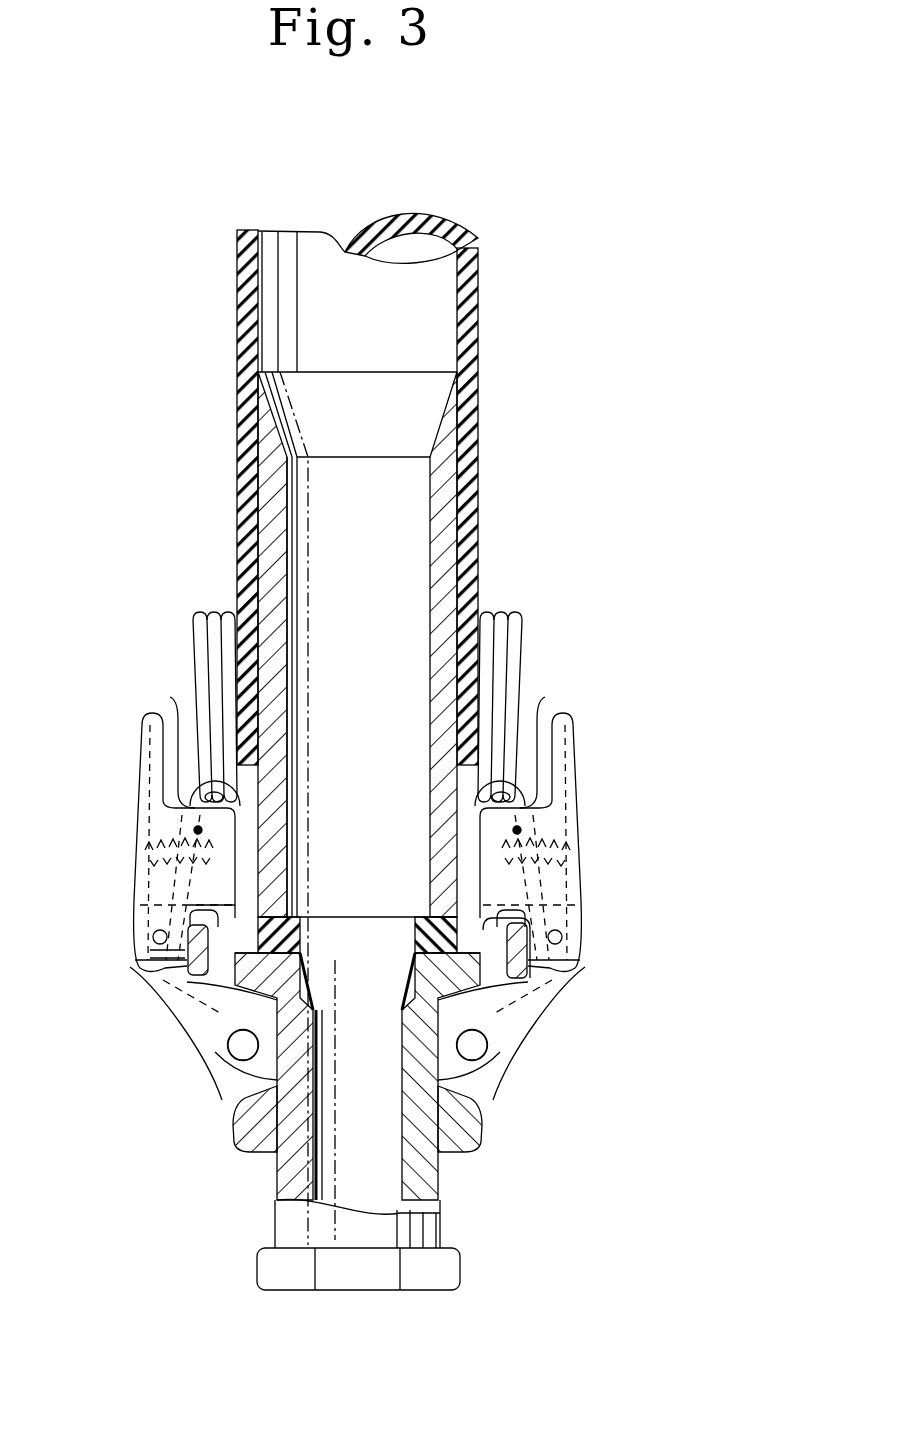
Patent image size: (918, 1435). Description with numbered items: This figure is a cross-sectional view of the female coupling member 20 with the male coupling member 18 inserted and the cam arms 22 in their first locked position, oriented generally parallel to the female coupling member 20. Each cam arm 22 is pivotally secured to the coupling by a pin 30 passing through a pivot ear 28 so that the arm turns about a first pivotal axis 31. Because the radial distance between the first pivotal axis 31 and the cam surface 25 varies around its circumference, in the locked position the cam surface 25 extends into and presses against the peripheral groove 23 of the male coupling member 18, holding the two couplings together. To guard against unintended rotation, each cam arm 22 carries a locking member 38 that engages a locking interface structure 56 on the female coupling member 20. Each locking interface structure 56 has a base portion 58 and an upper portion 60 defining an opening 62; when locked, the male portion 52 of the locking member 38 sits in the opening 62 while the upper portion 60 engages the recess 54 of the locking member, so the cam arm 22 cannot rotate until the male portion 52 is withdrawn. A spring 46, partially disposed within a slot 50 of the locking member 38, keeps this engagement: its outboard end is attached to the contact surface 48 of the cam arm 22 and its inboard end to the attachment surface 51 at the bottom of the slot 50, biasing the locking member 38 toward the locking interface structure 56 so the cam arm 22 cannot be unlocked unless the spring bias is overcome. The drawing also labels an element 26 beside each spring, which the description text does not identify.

The male coupling member 18 is at (445, 1178).
The female coupling member 20 is at (270, 762).
The cam arm 22 is at (135, 830).
The peripheral groove 23 is at (245, 1115).
The cam surface 25 is at (316, 1085).
The coil spring 26 is at (200, 628).
The pivot ear 28 is at (220, 1093).
The pin 30 is at (233, 1035).
The first pivotal axis 31 is at (243, 1045).
The locking member 38 is at (170, 697).
The spring 46 is at (130, 815).
The contact surface 48 is at (143, 755).
The slot 50 is at (232, 800).
The attachment surface 51 is at (200, 832).
The male portion 52 is at (300, 925).
The recess 54 is at (192, 915).
The locking interface structure 56 is at (200, 908).
The base portion 58 is at (190, 962).
The upper portion 60 is at (170, 952).
The opening 62 is at (228, 946).